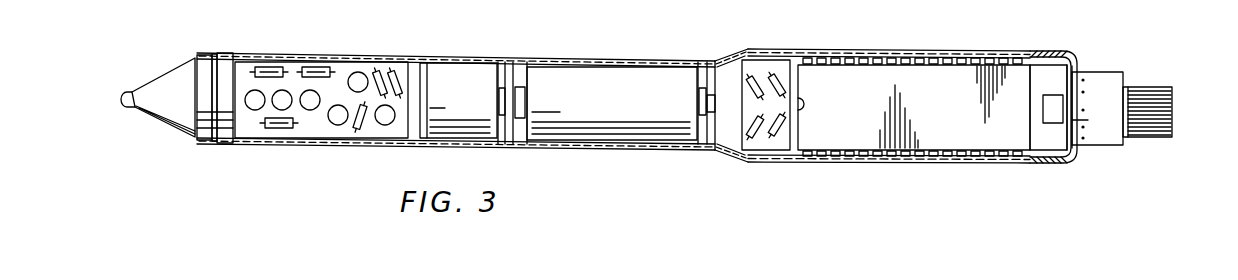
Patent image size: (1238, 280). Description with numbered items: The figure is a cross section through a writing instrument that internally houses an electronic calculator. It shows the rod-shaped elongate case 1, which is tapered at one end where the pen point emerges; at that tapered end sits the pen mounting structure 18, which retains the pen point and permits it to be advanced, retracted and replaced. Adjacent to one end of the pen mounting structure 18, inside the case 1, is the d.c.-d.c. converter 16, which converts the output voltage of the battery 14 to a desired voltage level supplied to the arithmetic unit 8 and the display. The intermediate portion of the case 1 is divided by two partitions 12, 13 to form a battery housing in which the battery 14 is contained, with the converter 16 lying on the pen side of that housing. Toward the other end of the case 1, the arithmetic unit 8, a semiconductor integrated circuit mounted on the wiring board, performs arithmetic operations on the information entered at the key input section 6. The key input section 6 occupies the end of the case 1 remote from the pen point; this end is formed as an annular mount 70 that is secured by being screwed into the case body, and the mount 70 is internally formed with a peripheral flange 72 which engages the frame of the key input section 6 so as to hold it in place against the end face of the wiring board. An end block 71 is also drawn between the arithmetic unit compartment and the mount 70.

The pen mounting structure 18 is at (168, 82).
The d.c.-d.c. converter 16 is at (343, 72).
The case 1 is at (438, 57).
The partition 12 is at (508, 62).
The battery 14 is at (607, 68).
The partition 13 is at (713, 67).
The arithmetic unit 8 is at (955, 130).
The end block 71 is at (1033, 163).
The annular mount 70 is at (1062, 163).
The peripheral flange 72 is at (1078, 150).
The key input section 6 is at (1149, 150).